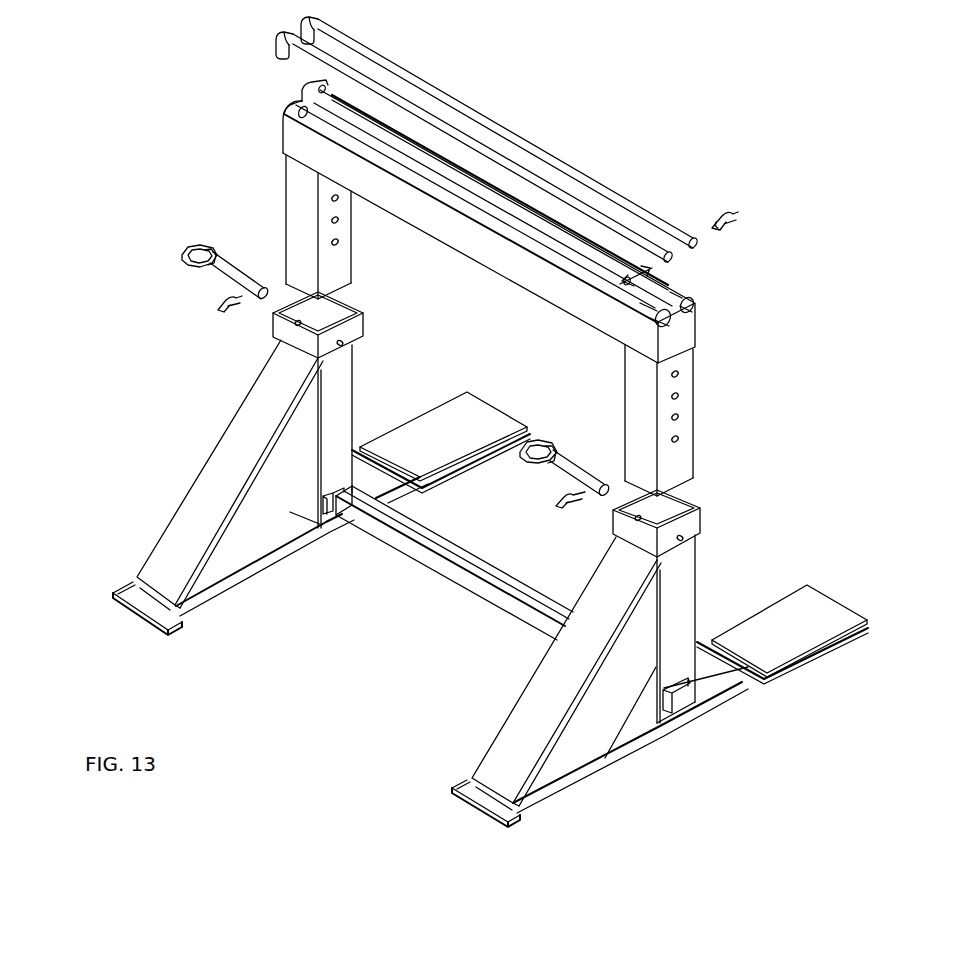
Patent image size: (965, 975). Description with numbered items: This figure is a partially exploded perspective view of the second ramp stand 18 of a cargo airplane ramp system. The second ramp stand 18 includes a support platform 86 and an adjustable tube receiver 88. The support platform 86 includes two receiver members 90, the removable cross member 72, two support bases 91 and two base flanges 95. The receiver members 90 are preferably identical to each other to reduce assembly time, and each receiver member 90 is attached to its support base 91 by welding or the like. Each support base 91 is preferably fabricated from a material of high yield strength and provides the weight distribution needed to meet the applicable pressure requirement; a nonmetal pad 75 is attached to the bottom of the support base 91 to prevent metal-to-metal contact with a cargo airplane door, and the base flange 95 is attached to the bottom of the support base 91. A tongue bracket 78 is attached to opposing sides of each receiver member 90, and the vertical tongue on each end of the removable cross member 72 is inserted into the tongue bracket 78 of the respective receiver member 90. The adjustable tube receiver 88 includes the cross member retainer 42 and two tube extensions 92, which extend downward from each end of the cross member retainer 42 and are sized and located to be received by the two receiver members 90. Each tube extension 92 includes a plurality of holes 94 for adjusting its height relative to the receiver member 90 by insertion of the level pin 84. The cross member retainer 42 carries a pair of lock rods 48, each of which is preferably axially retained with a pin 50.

The second ramp stand 18 is at (856, 326).
The cross member retainer 42 is at (722, 289).
The lock rod 48 is at (548, 135).
The pin 50 is at (738, 214).
The removable cross member 72 is at (458, 601).
The nonmetal pad 75 is at (448, 415).
The tongue bracket 78 is at (324, 540).
The level pin 84 is at (190, 266).
The support platform 86 is at (248, 685).
The adjustable tube receiver 88 is at (752, 447).
The receiver member 90 is at (153, 513).
The support base 91 is at (182, 605).
The tube extension 92 is at (272, 190).
The holes 94 is at (340, 245).
The base flange 95 is at (143, 612).